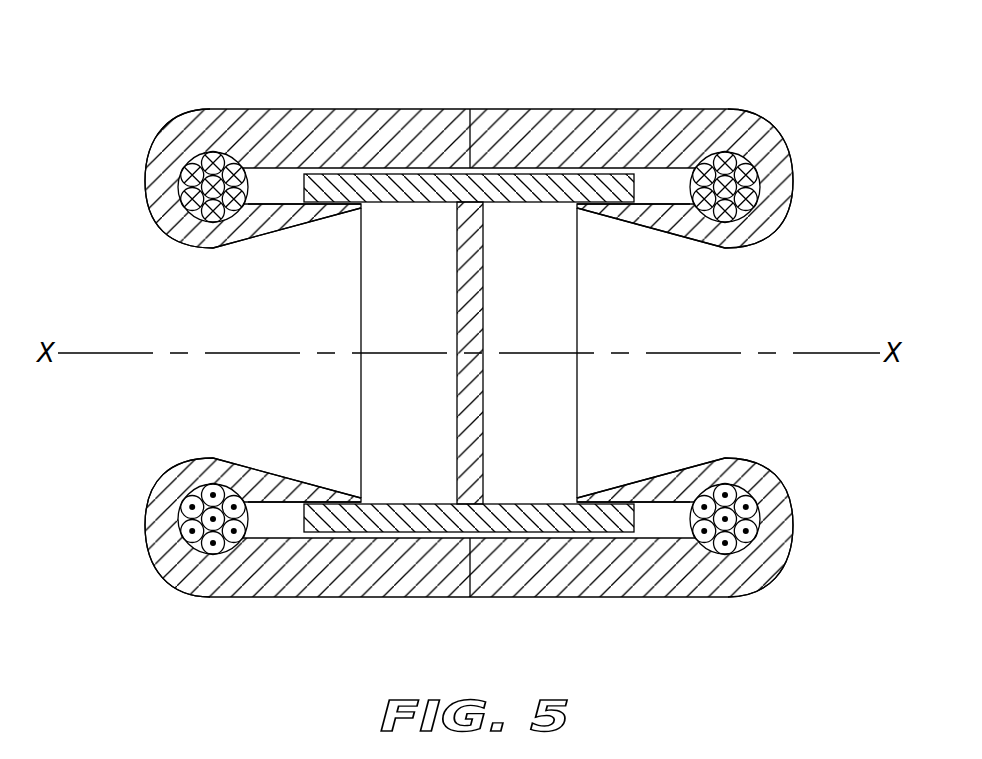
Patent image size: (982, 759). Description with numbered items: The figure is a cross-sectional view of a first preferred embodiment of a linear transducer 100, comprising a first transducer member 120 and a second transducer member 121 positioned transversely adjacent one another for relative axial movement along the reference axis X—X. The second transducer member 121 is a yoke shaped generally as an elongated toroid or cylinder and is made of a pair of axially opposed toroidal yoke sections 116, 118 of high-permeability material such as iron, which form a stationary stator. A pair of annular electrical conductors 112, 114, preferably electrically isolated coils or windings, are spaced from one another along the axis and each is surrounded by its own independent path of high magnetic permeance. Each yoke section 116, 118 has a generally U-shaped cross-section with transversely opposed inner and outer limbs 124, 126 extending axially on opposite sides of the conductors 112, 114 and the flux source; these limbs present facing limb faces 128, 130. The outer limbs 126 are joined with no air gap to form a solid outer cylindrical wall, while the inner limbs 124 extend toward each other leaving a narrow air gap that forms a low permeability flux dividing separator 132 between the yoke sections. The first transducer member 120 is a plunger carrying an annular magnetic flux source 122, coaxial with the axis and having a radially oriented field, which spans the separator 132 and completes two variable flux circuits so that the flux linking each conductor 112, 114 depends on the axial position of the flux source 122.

The linear transducer 100 is at (402, 78).
The annular electrical conductor 112 is at (155, 143).
The annular electrical conductor 114 is at (777, 150).
The toroidal yoke section 116 is at (188, 295).
The toroidal yoke section 118 is at (753, 297).
The first transducer member 120 is at (479, 389).
The second transducer member 121 is at (447, 105).
The annular magnetic flux source 122 is at (522, 204).
The inner yoke limb 124 is at (233, 236).
The outer yoke limb 126 is at (343, 140).
The limb face 128 is at (283, 208).
The limb face 130 is at (259, 145).
The low permeability flux dividing separator 132 is at (395, 214).